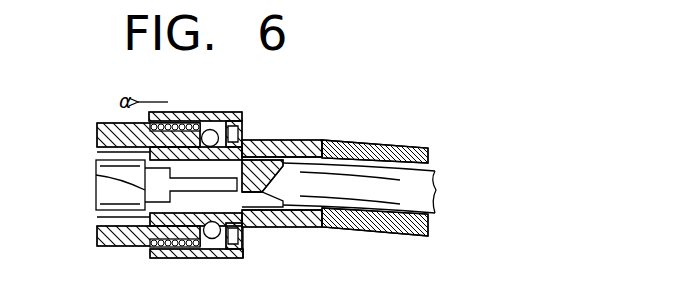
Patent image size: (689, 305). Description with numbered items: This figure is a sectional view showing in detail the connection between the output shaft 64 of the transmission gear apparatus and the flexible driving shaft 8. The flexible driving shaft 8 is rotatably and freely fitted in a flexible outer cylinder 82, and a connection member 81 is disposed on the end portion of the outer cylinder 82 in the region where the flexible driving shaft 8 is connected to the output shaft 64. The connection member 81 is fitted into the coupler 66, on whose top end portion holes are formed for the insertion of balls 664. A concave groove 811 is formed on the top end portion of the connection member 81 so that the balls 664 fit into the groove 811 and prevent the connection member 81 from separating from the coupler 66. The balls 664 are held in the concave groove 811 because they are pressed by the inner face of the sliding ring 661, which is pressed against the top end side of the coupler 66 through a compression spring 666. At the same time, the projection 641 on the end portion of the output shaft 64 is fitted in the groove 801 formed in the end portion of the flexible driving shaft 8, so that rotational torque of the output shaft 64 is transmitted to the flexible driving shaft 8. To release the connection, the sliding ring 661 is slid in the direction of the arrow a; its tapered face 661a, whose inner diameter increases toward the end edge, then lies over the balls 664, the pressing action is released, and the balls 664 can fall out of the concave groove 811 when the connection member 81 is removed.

The coupler 66 is at (107, 128).
The balls 664 is at (210, 135).
The compression spring 666 is at (157, 262).
The sliding ring 661 is at (183, 260).
The tapered face 661a is at (246, 233).
The groove 801 is at (253, 158).
The concave groove 811 is at (208, 260).
The connection member 81 is at (293, 140).
The flexible outer cylinder 82 is at (372, 140).
The flexible driving shaft 8 is at (364, 190).
The output shaft 64 is at (102, 175).
The projection 641 is at (105, 187).